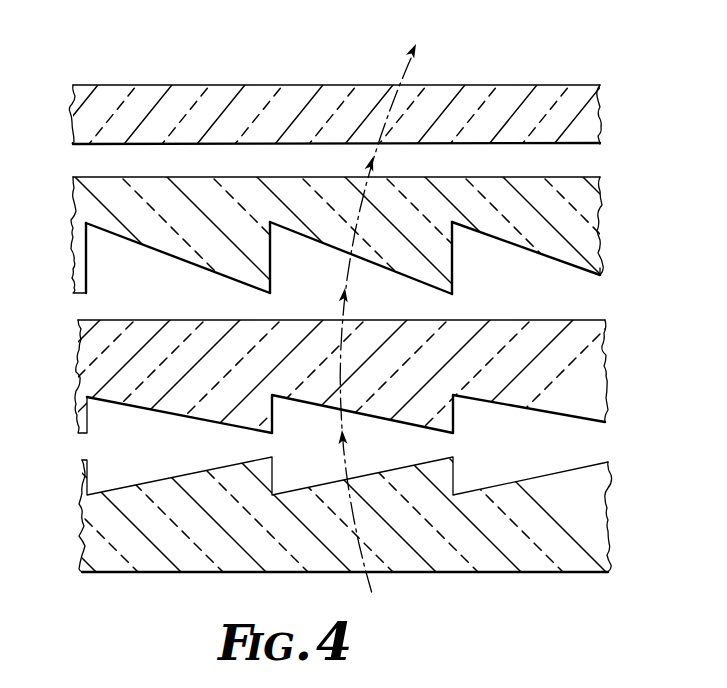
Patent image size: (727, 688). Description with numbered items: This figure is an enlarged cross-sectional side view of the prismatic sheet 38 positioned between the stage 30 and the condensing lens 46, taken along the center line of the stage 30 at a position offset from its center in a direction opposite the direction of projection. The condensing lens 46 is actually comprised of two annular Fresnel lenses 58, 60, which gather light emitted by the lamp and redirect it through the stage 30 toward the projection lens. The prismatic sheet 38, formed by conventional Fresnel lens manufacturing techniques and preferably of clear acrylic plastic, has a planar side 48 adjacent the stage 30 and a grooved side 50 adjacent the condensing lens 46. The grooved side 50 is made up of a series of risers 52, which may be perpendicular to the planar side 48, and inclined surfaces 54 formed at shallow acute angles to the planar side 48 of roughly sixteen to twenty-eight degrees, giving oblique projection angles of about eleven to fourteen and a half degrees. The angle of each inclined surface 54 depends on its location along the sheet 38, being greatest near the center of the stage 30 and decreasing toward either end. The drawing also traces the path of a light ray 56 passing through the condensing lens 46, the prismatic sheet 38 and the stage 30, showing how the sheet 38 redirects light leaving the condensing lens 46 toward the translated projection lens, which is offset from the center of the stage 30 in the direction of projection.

The stage 30 is at (348, 114).
The prismatic sheet 38 is at (389, 239).
The planar side 48 is at (336, 161).
The grooved side 50 is at (343, 266).
The risers 52 is at (294, 258).
The inclined surfaces 54 is at (618, 286).
The condensing lens 46 is at (345, 465).
The annular Fresnel lens 58 is at (312, 377).
The annular Fresnel lens 60 is at (308, 535).
The light ray 56 is at (386, 334).